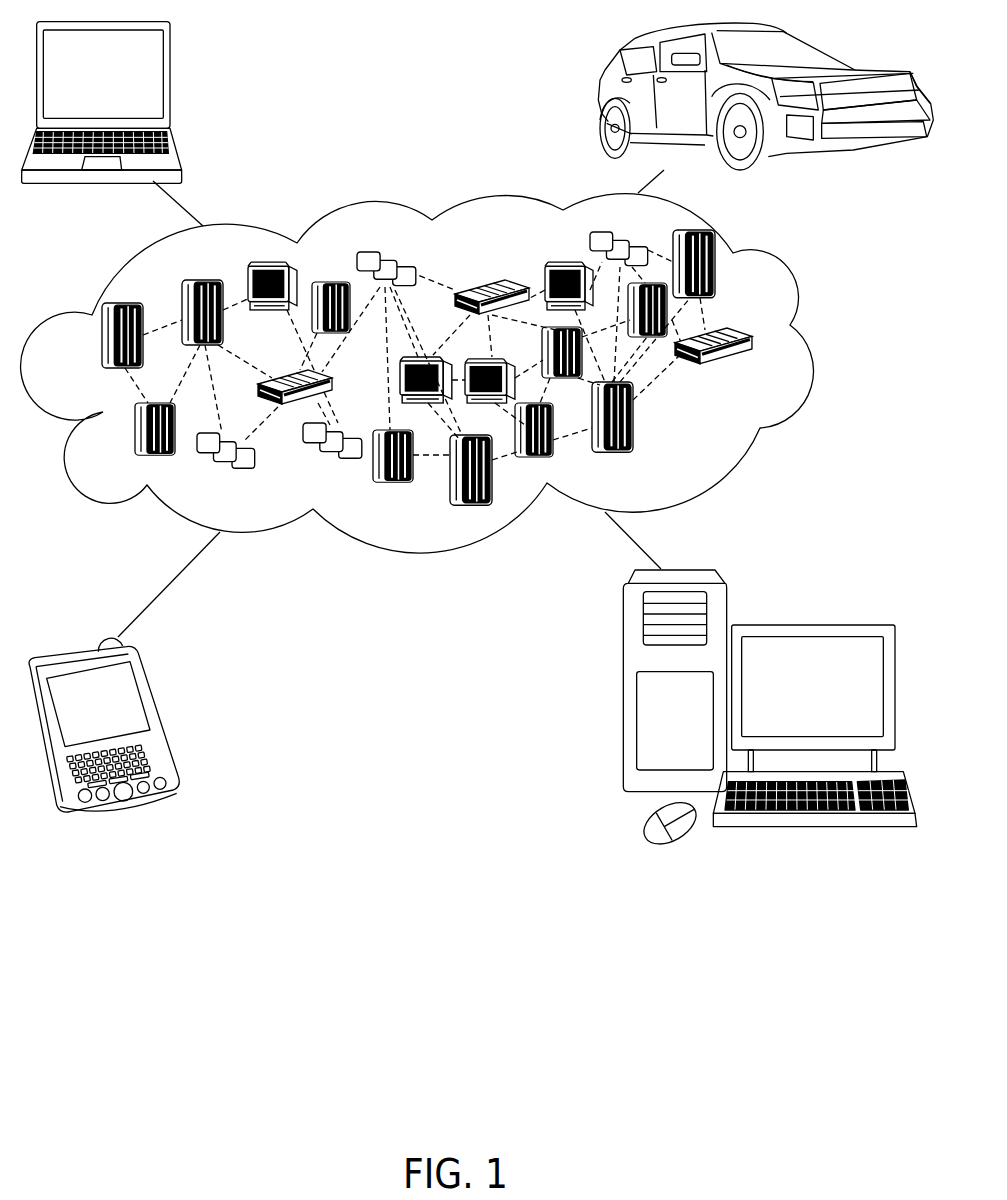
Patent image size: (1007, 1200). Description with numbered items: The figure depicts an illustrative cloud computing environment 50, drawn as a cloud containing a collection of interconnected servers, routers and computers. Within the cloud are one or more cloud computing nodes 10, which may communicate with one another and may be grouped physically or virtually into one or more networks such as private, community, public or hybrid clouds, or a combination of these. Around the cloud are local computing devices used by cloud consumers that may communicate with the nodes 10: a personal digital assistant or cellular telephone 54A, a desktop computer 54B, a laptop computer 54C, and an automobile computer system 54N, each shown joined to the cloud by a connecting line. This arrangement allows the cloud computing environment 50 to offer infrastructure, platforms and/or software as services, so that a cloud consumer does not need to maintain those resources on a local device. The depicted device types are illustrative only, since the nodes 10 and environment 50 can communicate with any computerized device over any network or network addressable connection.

The cloud computing nodes 10 is at (756, 376).
The cloud computing environment 50 is at (810, 345).
The personal digital assistant or cellular telephone 54A is at (160, 720).
The desktop computer 54B is at (808, 625).
The laptop computer 54C is at (170, 80).
The automobile computer system 54N is at (596, 97).